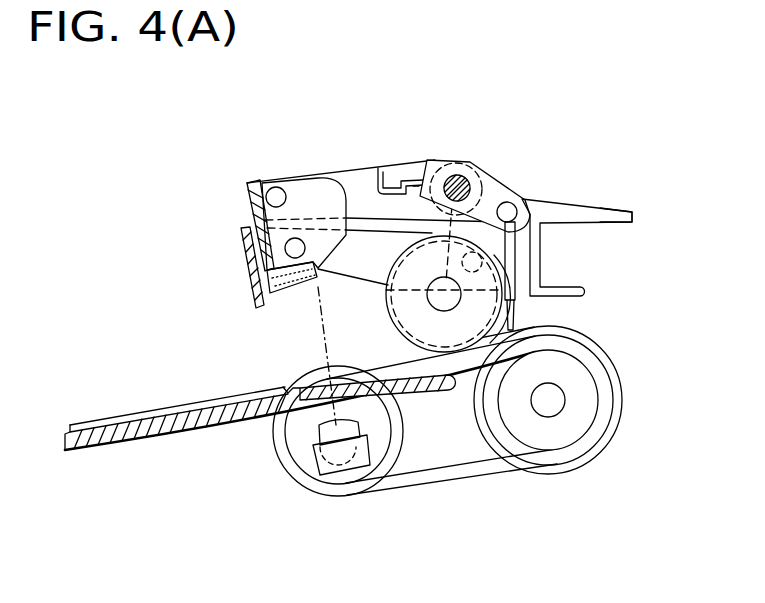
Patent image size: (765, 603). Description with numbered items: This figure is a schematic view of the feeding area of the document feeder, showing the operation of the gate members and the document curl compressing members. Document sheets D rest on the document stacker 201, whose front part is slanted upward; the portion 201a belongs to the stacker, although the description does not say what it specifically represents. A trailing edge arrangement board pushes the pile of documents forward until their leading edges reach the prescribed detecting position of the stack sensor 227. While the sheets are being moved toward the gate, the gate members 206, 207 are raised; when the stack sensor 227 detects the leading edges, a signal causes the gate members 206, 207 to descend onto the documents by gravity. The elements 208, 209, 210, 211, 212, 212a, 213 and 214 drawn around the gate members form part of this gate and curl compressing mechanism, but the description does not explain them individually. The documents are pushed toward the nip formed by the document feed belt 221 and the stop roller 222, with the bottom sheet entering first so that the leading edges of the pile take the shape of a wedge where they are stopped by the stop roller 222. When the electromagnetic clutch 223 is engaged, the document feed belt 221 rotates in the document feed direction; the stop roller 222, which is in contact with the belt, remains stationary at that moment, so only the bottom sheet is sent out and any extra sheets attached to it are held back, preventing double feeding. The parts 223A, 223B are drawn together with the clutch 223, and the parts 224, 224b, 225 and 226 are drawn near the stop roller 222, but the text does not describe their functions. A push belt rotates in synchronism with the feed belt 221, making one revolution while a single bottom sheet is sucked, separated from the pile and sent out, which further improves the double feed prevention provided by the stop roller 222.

The document stacker 201 is at (105, 452).
The guide surface 201a is at (125, 417).
The gate member 206 is at (247, 203).
The gate member 207 is at (243, 240).
The pad 208 is at (292, 292).
The arm 209 is at (609, 210).
The bracket 210 is at (523, 205).
The pivot pin 211 is at (460, 180).
The lever arm 212 is at (342, 178).
The lever arm portion 212a is at (405, 177).
The lever lower portion 213 is at (345, 268).
The tab 214 is at (377, 177).
The document feed belt 221 is at (482, 473).
The stop roller 222 is at (460, 340).
The electromagnetic clutch 223 is at (625, 385).
The drive pulley 223A is at (575, 423).
The driven pulley 223B is at (275, 452).
The roller 224 is at (397, 332).
The roller support 224b is at (515, 327).
The support bar 225 is at (516, 252).
The pin 226 is at (497, 180).
The stack sensor 227 is at (300, 482).